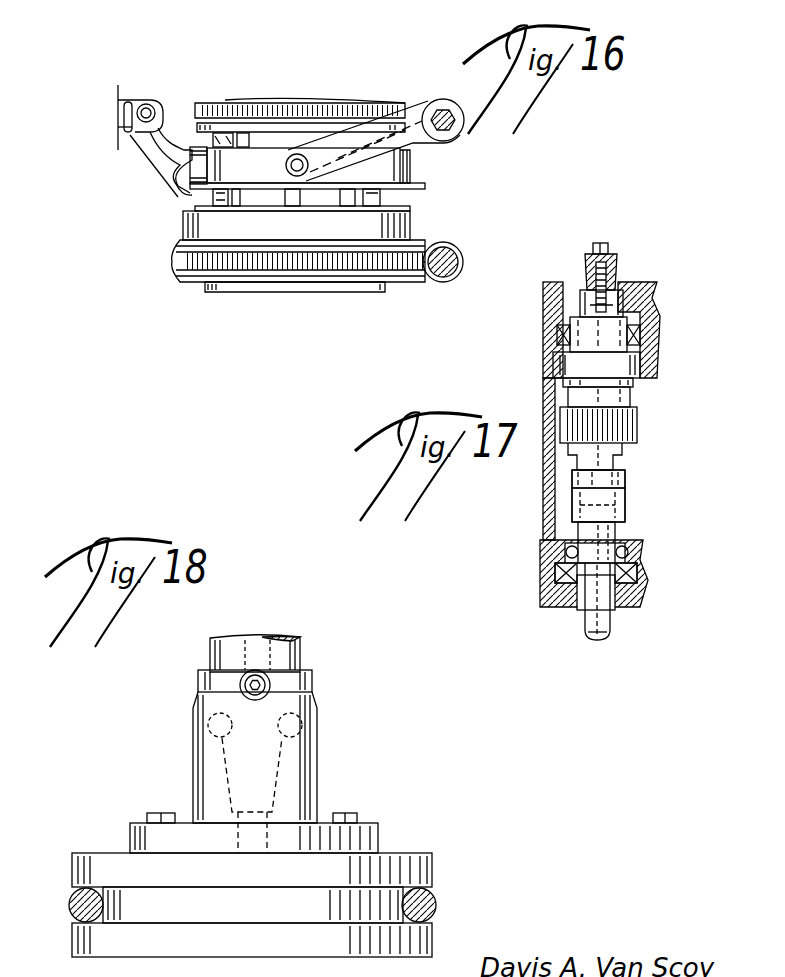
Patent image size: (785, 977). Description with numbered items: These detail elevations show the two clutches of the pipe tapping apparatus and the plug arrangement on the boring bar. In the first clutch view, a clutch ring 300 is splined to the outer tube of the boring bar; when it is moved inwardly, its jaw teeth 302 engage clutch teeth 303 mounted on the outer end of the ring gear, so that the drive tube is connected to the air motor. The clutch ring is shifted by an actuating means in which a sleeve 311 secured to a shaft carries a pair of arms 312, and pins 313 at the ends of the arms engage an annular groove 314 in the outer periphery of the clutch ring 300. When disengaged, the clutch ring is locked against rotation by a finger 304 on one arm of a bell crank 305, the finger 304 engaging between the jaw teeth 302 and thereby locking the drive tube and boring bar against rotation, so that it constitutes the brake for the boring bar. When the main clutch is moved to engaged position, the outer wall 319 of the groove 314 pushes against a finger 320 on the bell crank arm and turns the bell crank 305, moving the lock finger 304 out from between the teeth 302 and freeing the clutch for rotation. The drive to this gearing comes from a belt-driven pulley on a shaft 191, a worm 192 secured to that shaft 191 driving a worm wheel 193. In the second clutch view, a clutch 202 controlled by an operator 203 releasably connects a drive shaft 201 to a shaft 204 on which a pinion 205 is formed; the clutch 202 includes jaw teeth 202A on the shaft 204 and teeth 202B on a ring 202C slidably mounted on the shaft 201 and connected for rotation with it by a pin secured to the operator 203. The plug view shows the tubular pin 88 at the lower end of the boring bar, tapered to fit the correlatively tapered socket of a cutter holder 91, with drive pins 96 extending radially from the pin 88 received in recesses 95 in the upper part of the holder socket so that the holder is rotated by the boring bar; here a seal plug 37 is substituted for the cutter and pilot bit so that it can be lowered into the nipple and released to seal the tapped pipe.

In FIG. 16, the bell crank 305 is at (153, 147).
In FIG. 16, the outer wall of groove 319 is at (190, 150).
In FIG. 16, the finger 320 is at (165, 152).
In FIG. 16, the finger 304 is at (190, 194).
In FIG. 16, the annular groove 314 is at (278, 171).
In FIG. 16, the arms 312 is at (403, 115).
In FIG. 16, the sleeve 311 is at (462, 130).
In FIG. 16, the pins 313 is at (297, 154).
In FIG. 16, the clutch ring 300 is at (412, 186).
In FIG. 16, the jaw teeth 302 is at (394, 200).
In FIG. 16, the clutch teeth 303 is at (322, 206).
In FIG. 16, the worm wheel 193 is at (172, 266).
In FIG. 16, the shaft 191 is at (452, 258).
In FIG. 16, the worm 192 is at (447, 281).
In FIG. 17, the operator 203 is at (620, 265).
In FIG. 17, the shaft 204 is at (632, 398).
In FIG. 17, the pinion 205 is at (640, 421).
In FIG. 17, the jaw teeth 202A is at (623, 458).
In FIG. 17, the clutch 202 is at (638, 470).
In FIG. 17, the teeth 202B is at (628, 484).
In FIG. 17, the ring 202C is at (628, 505).
In FIG. 17, the drive shaft 201 is at (620, 537).
In FIG. 18, the tubular pin 88 is at (210, 650).
In FIG. 18, the drive pins 96 is at (255, 670).
In FIG. 18, the cutter holder 91 is at (318, 777).
In FIG. 18, the recesses 95 is at (238, 700).
In FIG. 18, the seal plug 37 is at (432, 871).